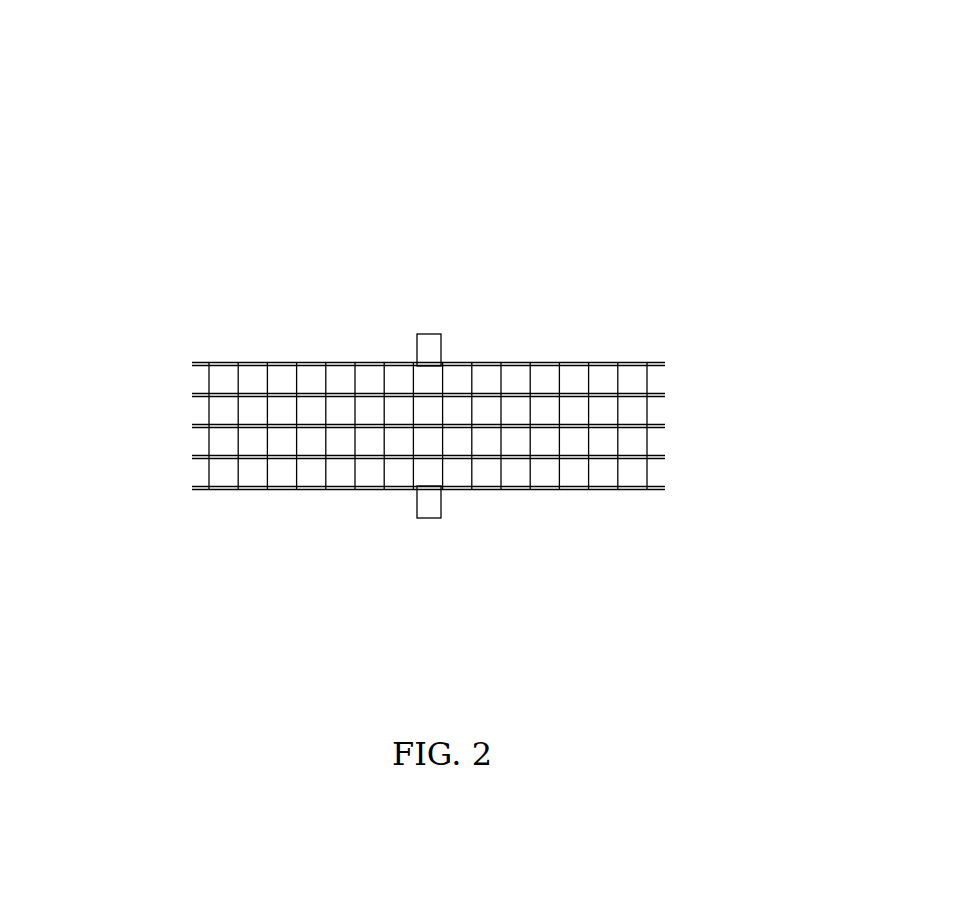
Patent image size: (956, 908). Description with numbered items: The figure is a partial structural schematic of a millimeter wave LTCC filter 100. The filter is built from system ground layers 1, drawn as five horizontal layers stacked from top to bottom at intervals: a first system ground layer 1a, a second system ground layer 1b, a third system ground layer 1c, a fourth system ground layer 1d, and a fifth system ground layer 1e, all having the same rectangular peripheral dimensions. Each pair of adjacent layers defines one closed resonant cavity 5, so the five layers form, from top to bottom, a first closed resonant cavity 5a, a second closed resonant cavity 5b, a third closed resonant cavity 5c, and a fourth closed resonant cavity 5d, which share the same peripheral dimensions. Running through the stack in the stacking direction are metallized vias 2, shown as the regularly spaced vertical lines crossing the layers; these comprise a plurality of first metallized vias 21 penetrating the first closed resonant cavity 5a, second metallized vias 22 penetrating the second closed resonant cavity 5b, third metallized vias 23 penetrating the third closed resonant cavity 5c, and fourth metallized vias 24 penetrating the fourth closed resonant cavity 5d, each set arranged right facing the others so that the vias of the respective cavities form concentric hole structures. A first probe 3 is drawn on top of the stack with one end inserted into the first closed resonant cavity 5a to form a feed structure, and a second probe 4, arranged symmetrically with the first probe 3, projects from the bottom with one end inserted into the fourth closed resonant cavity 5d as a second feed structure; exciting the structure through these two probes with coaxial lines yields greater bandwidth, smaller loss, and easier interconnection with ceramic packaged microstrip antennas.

The millimeter wave LTCC filter 100 is at (393, 43).
The system ground layers 1 is at (367, 425).
The first system ground layer 1a is at (192, 364).
The second system ground layer 1b is at (192, 395).
The third system ground layer 1c is at (192, 426).
The fourth system ground layer 1d is at (192, 457).
The fifth system ground layer 1e is at (386, 483).
The metallized vias 2 is at (379, 429).
The first metallized vias 21 is at (634, 378).
The second metallized vias 22 is at (578, 412).
The third metallized vias 23 is at (632, 438).
The fourth metallized vias 24 is at (573, 476).
The first probe 3 is at (427, 347).
The second probe 4 is at (430, 517).
The closed resonant cavity 5 is at (727, 402).
The first closed resonant cavity 5a is at (657, 380).
The second closed resonant cavity 5b is at (654, 416).
The third closed resonant cavity 5c is at (656, 446).
The fourth closed resonant cavity 5d is at (654, 476).